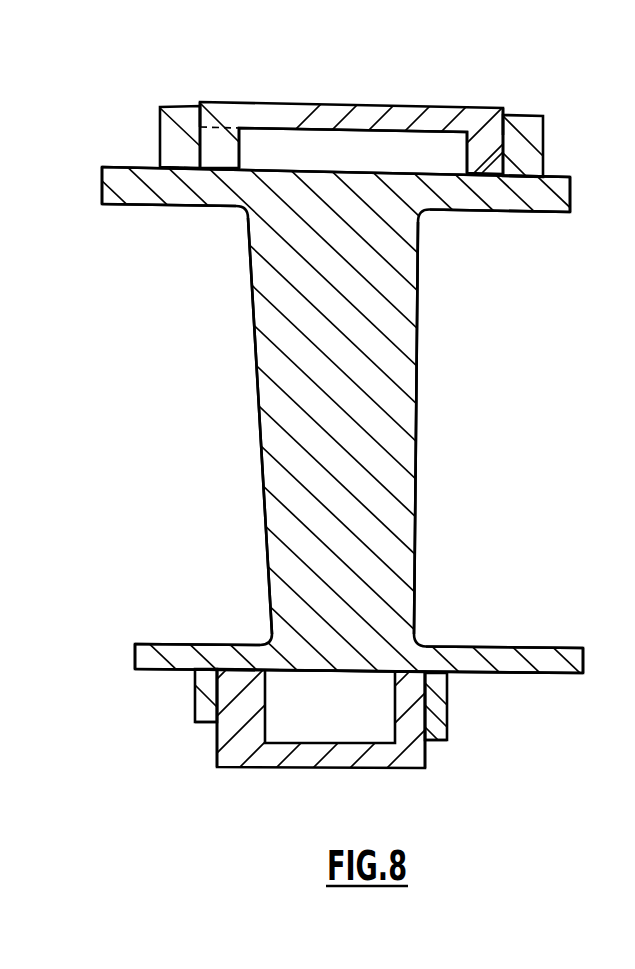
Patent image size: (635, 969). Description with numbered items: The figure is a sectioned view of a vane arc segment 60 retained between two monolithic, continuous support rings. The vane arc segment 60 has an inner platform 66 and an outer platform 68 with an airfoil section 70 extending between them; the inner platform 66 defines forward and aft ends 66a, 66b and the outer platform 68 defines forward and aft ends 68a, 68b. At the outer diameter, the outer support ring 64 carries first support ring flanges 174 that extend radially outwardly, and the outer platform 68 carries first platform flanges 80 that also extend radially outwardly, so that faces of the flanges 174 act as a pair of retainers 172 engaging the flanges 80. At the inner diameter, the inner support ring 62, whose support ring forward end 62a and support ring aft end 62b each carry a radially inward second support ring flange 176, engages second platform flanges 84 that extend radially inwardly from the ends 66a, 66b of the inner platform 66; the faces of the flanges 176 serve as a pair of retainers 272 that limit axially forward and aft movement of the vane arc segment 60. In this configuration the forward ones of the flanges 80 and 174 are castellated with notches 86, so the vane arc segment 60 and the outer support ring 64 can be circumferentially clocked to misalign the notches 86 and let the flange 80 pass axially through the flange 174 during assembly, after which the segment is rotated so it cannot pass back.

The vane arc segment 60 is at (210, 380).
The inner support ring 62 is at (340, 754).
The support ring forward end 62a is at (245, 770).
The support ring aft end 62b is at (410, 770).
The outer support ring 64 is at (369, 114).
The inner platform 66 is at (450, 658).
The inner platform forward end 66a is at (153, 641).
The inner platform aft end 66b is at (560, 647).
The outer platform 68 is at (180, 197).
The outer platform forward end 68a is at (127, 205).
The outer platform aft end 68b is at (533, 215).
The airfoil section 70 is at (263, 467).
The first platform flange 80 is at (187, 137).
The second platform flange 84 is at (203, 708).
The notch 86 is at (218, 127).
The retainer 172 is at (192, 98).
The first support ring flange 174 is at (231, 141).
The second support ring flange 176 is at (258, 720).
The retainer 272 is at (210, 730).